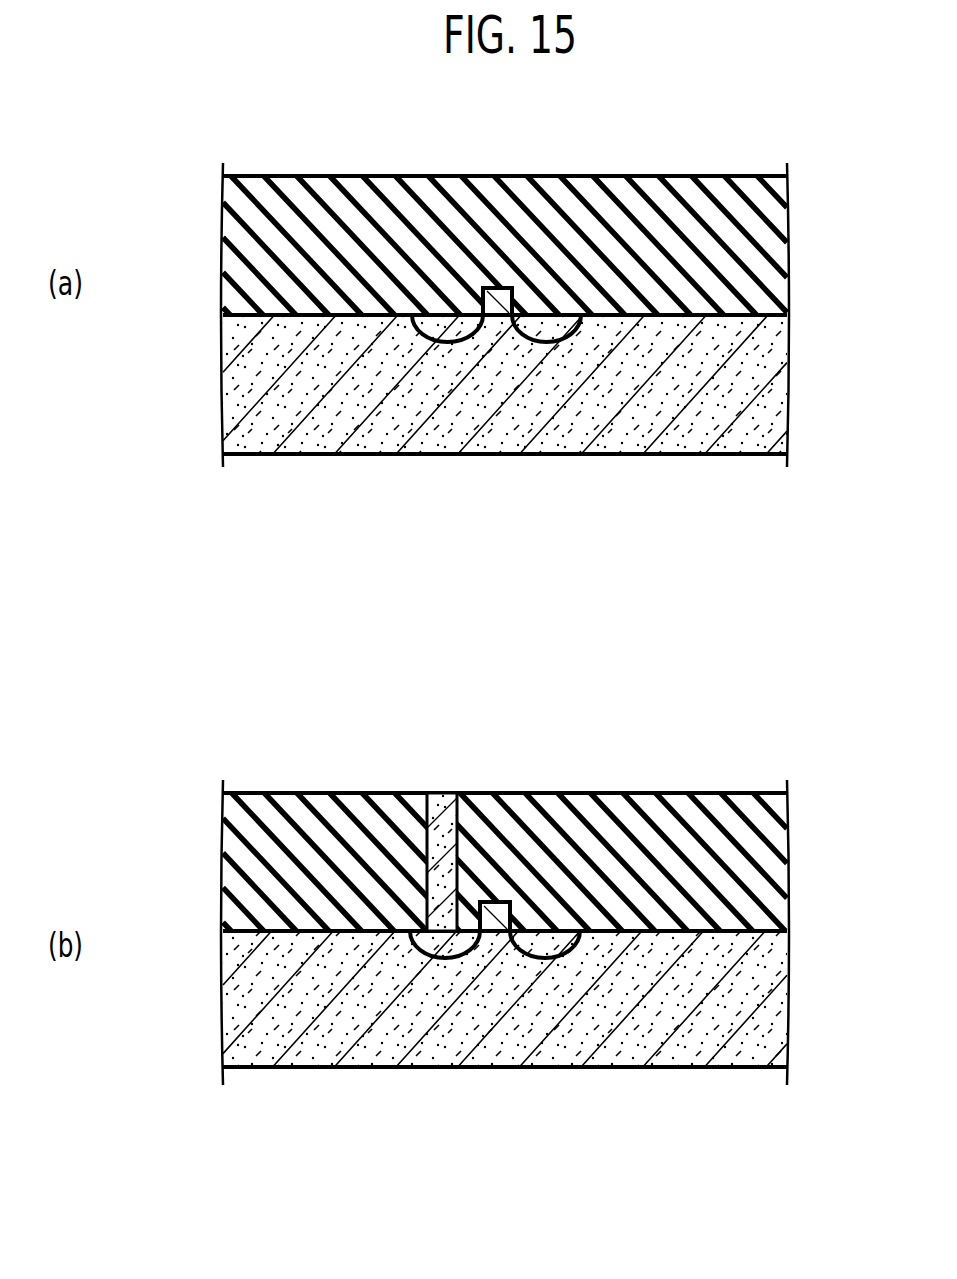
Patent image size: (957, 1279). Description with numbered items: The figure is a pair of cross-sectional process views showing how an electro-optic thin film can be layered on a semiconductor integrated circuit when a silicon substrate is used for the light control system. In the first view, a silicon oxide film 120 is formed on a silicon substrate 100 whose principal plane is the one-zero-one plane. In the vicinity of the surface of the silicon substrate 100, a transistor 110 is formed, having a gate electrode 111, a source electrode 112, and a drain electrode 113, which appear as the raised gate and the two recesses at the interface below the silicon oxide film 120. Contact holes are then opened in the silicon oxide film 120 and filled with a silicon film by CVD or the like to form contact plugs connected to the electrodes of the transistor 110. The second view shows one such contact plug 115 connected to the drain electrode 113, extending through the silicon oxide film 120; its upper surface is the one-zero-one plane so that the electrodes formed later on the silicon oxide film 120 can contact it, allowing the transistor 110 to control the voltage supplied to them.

The silicon substrate 100 is at (767, 403).
The transistor 110 is at (503, 752).
The gate electrode 111 is at (497, 303).
The source electrode 112 is at (553, 325).
The drain electrode 113 is at (443, 325).
The contact plug 115 is at (447, 810).
The silicon oxide film 120 is at (768, 250).